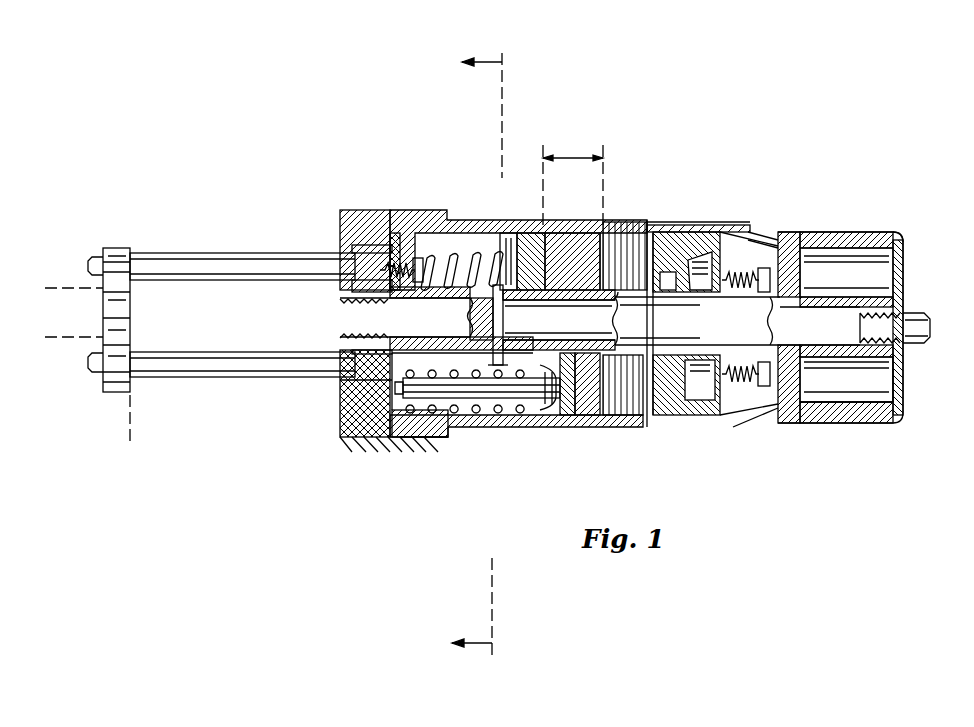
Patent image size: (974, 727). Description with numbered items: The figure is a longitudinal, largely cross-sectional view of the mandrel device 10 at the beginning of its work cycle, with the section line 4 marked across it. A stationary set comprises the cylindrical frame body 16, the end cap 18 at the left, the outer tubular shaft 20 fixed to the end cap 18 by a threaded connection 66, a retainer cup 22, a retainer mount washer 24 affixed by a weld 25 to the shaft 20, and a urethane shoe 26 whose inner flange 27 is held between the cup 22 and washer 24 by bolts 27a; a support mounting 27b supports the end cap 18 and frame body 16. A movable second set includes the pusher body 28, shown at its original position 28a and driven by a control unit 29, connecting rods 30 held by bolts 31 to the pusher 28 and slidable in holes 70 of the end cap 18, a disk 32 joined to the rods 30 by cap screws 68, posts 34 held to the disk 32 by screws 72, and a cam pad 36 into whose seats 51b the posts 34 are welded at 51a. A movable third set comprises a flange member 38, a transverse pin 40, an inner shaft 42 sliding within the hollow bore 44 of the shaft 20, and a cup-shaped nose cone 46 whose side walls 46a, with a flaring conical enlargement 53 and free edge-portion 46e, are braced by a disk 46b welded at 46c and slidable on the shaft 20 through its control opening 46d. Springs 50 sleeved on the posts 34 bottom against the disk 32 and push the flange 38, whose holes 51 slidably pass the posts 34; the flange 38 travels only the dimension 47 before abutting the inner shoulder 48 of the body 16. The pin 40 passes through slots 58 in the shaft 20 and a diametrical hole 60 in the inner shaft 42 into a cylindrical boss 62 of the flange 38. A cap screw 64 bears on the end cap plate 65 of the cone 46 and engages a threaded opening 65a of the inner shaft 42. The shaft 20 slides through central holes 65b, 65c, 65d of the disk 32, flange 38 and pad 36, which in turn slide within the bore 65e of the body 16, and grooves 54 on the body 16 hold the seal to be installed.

The section line 4- 4 is at (485, 357).
The device 10 is at (846, 130).
The frame body 16 is at (420, 212).
The end cap 18 is at (362, 210).
The outer tubular shaft 20 is at (914, 408).
The retainer cup 22 is at (777, 246).
The retainer mount washer 24 is at (722, 292).
The weld 25 is at (686, 385).
The urethane shoe 26 is at (686, 232).
The inner flange 27 is at (754, 232).
The bolts 27a is at (774, 276).
The support mounting 27b is at (378, 445).
The pusher body 28 is at (130, 298).
The position 28a is at (131, 427).
The control unit 29 is at (78, 310).
The connecting rods 30 is at (172, 258).
The bolts 31 is at (88, 266).
The disk 32 is at (352, 402).
The posts 34 is at (446, 428).
The cam pad 36 is at (567, 398).
The flange member 38 is at (528, 232).
The transverse pin 40 is at (470, 318).
The inner shaft 42 is at (348, 320).
The hollow bore 44 is at (613, 298).
The nose cone 46 is at (868, 230).
The side walls 46a is at (727, 228).
The disk 46b is at (782, 385).
The weld 46c is at (822, 402).
The control opening 46d is at (808, 362).
The free edge-portion 46e is at (663, 228).
The dimension 47 is at (561, 158).
The inner shoulder 48 is at (592, 398).
The springs 50 is at (455, 398).
The holes 51 is at (508, 400).
The weld 51a is at (528, 400).
The seats 51b is at (546, 398).
The conical enlargement 53 is at (758, 235).
The grooves 54 is at (630, 228).
The slots 58 is at (564, 312).
The diametrical hole 60 is at (505, 323).
The cylindrical boss 62 is at (472, 398).
The cap screw 64 is at (931, 324).
The end cap plate 65 is at (905, 250).
The threaded opening 65a is at (896, 356).
The central hole 65b is at (335, 372).
The central hole 65c is at (507, 232).
The central hole 65d is at (575, 268).
The bore 65e is at (420, 440).
The threaded connection 66 is at (341, 349).
The cap screws 68 is at (420, 270).
The holes 70 is at (352, 248).
The screws 72 is at (342, 428).